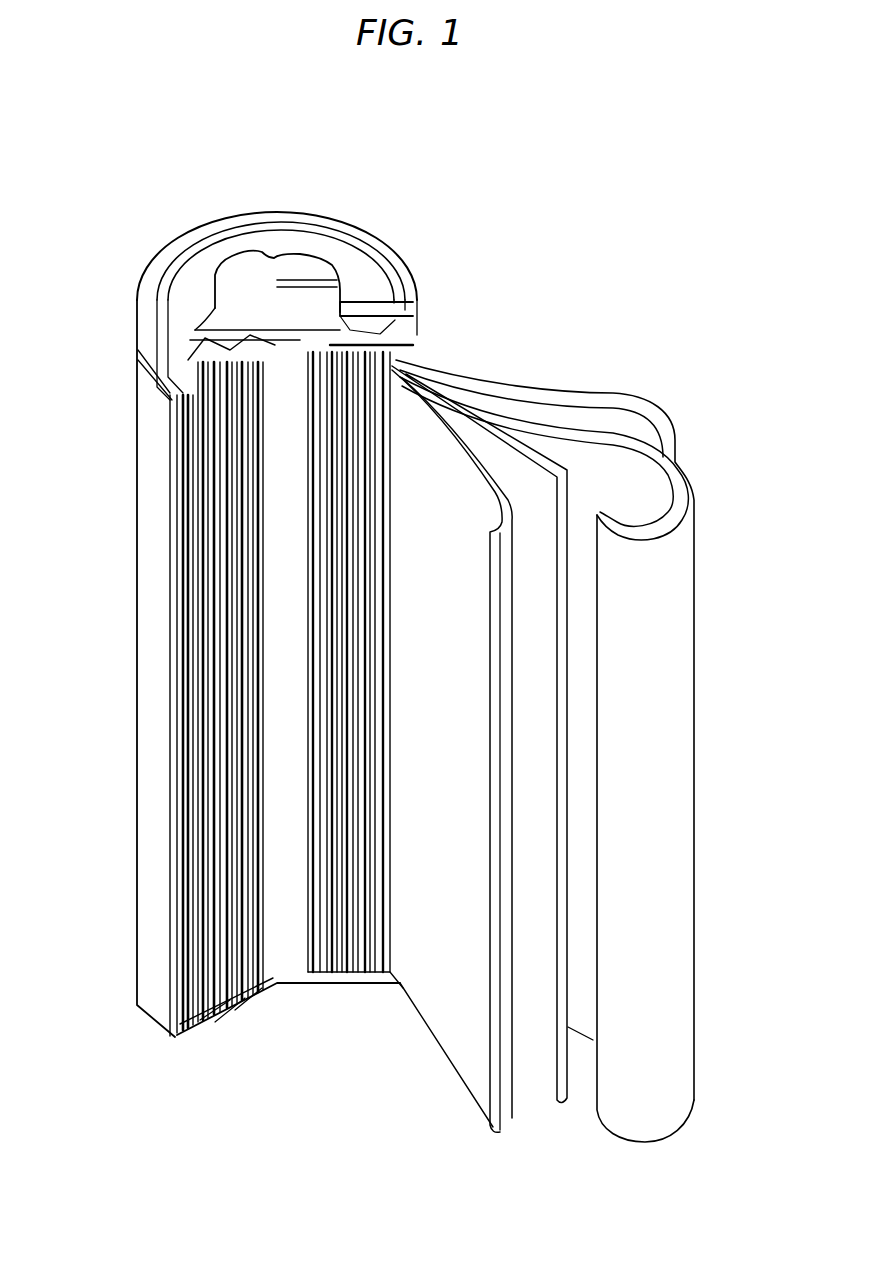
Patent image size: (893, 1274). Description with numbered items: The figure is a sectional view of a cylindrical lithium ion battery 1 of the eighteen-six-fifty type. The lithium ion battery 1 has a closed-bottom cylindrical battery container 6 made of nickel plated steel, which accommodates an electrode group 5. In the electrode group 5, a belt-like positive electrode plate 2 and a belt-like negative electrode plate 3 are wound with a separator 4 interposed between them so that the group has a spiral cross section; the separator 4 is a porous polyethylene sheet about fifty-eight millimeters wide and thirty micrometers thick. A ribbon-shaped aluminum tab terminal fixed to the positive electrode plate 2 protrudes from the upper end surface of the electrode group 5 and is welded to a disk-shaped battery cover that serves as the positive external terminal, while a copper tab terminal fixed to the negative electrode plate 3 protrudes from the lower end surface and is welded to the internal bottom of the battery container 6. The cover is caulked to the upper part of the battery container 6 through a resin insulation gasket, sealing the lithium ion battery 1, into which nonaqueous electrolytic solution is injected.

The lithium ion battery 1 is at (428, 203).
The positive electrode plate 2 is at (432, 995).
The negative electrode plate 3 is at (627, 662).
The separator 4 is at (517, 388).
The electrode group 5 is at (173, 772).
The battery container 6 is at (137, 592).